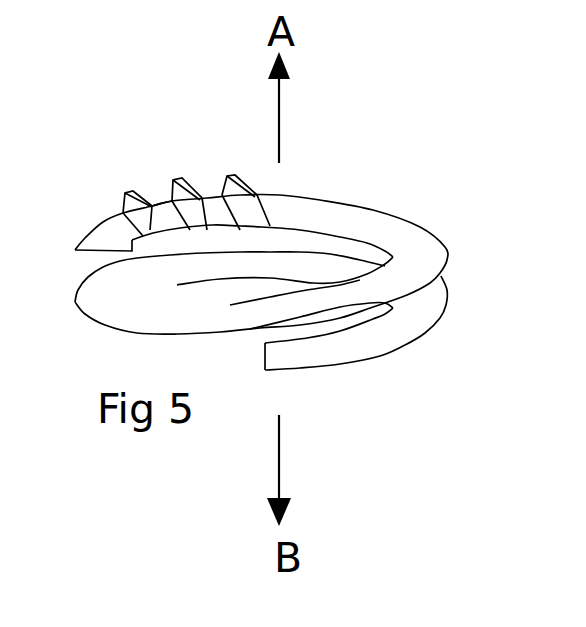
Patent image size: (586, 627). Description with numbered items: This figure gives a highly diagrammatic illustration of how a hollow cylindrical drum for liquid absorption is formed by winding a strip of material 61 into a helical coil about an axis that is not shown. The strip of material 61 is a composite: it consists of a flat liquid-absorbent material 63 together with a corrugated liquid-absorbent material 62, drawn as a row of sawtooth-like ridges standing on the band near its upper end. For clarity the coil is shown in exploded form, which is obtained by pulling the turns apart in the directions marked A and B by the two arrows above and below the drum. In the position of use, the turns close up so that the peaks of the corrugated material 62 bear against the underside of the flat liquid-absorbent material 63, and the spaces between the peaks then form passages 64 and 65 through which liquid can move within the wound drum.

The strip of material 61 is at (383, 230).
The corrugated liquid-absorbent material 62 is at (230, 180).
The flat liquid-absorbent material 63 is at (203, 228).
The passage 64 is at (158, 226).
The passage 65 is at (160, 200).